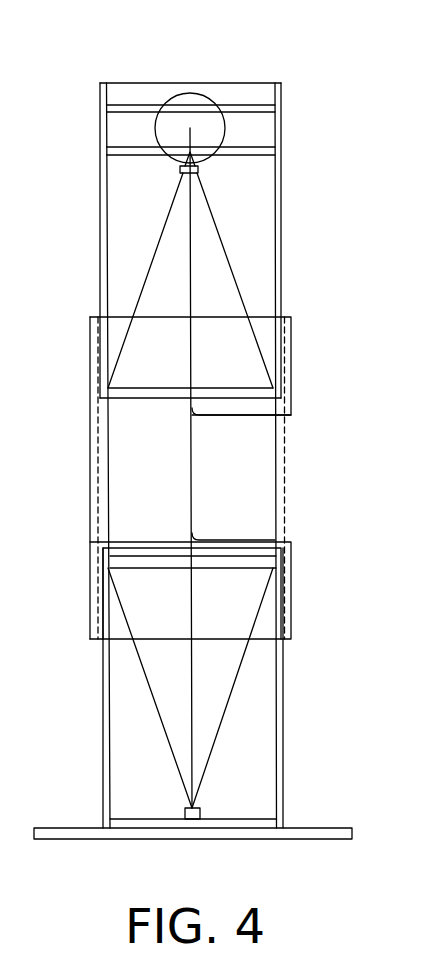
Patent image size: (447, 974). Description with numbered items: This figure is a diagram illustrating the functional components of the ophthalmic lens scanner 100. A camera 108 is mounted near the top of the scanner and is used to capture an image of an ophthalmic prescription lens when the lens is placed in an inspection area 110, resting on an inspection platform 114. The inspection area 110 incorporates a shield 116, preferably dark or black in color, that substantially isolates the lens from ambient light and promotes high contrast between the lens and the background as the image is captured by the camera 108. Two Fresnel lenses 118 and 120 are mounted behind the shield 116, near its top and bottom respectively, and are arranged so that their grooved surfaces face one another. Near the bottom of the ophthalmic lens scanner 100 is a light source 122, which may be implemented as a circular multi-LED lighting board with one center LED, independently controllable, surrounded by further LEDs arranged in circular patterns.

The ophthalmic lens scanner 100 is at (333, 122).
The camera 108 is at (188, 127).
The inspection area 110 is at (253, 472).
The inspection platform 114 is at (223, 546).
The shield 116 is at (90, 374).
The Fresnel lens 118 is at (219, 388).
The Fresnel lens 120 is at (147, 568).
The light source 122 is at (192, 807).